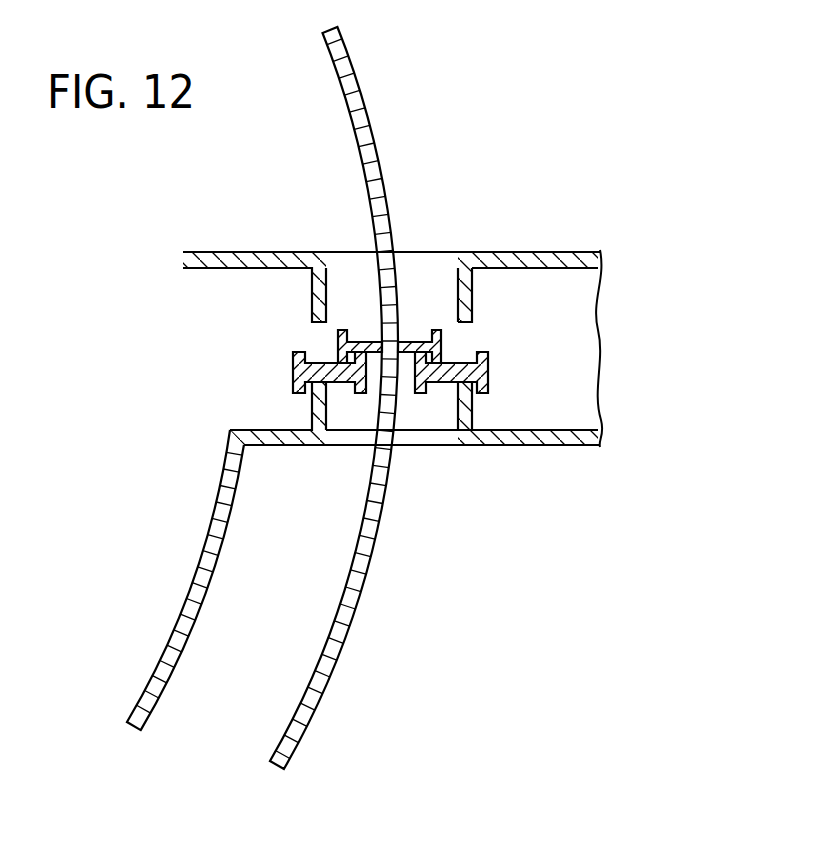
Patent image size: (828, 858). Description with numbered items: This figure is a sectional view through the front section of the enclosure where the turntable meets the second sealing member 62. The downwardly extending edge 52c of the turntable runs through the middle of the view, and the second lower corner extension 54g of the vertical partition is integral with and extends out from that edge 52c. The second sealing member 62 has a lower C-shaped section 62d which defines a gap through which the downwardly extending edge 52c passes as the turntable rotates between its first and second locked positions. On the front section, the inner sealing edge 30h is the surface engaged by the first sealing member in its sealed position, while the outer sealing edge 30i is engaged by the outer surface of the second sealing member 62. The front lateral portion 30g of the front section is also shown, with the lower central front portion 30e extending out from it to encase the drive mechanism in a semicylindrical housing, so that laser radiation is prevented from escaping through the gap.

The inner sealing edge 30h is at (458, 327).
The second sealing member 62 is at (502, 327).
The second lower corner extension 54g is at (337, 345).
The outer sealing edge 30i is at (333, 387).
The lower C-shaped section 62d is at (418, 392).
The front lateral portion 30g is at (538, 438).
The downwardly extending edge 52c is at (352, 592).
The lower central front portion 30e is at (193, 630).